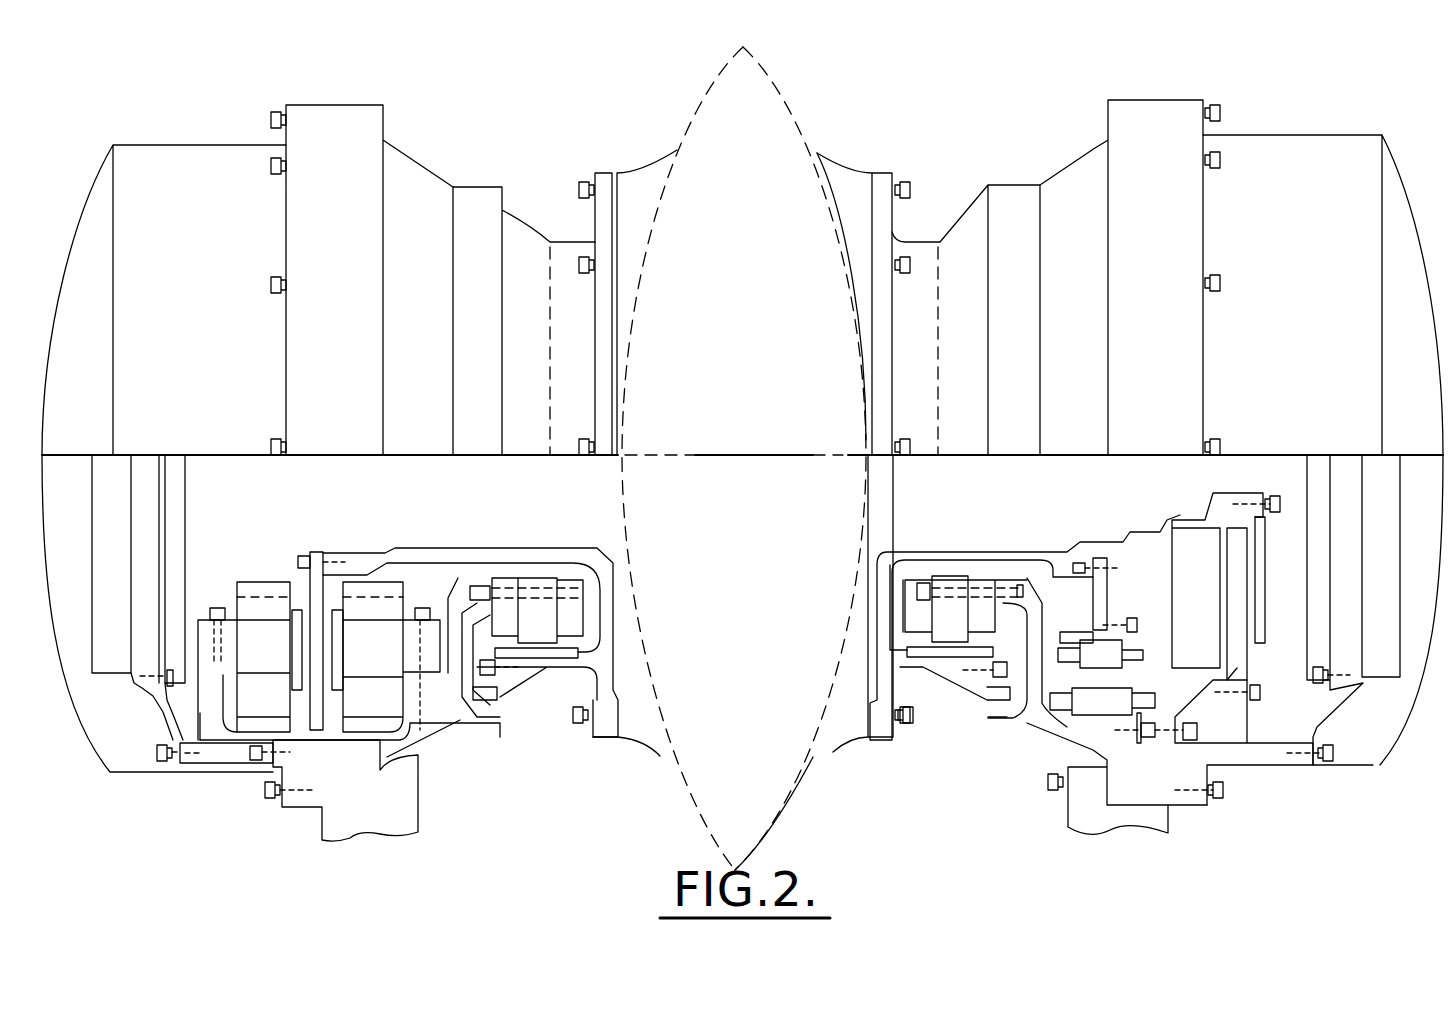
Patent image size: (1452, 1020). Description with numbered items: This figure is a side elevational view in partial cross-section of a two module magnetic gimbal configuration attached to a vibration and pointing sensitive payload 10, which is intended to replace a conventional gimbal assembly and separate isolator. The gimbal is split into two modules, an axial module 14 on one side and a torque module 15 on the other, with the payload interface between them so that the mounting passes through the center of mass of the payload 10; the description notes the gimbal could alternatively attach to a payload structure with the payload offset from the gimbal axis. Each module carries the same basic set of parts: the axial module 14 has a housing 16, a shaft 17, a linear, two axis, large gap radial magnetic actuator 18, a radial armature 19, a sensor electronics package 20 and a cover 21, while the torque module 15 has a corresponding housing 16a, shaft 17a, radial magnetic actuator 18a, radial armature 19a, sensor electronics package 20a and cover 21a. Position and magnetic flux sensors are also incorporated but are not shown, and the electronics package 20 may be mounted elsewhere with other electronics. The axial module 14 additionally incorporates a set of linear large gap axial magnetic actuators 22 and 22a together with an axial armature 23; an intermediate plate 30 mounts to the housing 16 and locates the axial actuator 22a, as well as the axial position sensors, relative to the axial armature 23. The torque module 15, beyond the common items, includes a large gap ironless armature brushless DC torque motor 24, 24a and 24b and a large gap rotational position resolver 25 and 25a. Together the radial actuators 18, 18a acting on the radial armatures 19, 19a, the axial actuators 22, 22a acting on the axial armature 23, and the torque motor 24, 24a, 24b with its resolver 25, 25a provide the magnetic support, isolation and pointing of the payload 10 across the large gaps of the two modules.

The payload 10 is at (881, 71).
The axial module 14 is at (336, 105).
The torque module 15 is at (1251, 95).
The housing 16 is at (483, 727).
The housing 16a is at (988, 723).
The shaft 17 is at (517, 690).
The shaft 17a is at (925, 690).
The radial magnetic actuator 18 is at (536, 580).
The radial magnetic actuator 18a is at (948, 580).
The radial armature 19 is at (578, 652).
The radial armature 19a is at (960, 690).
The sensor electronics package 20 is at (100, 665).
The sensor electronics package 20a is at (1388, 680).
The cover 21 is at (90, 195).
The cover 21a is at (1392, 152).
The axial magnetic actuator 22 is at (413, 720).
The axial magnetic actuator 22a is at (265, 582).
The axial armature 23 is at (310, 585).
The torque motor 24 is at (1170, 528).
The torque motor 24a is at (1268, 655).
The torque motor 24b is at (1268, 630).
The rotational position resolver 25 is at (1090, 707).
The rotational position resolver 25a is at (1143, 655).
The intermediate plate 30 is at (200, 713).